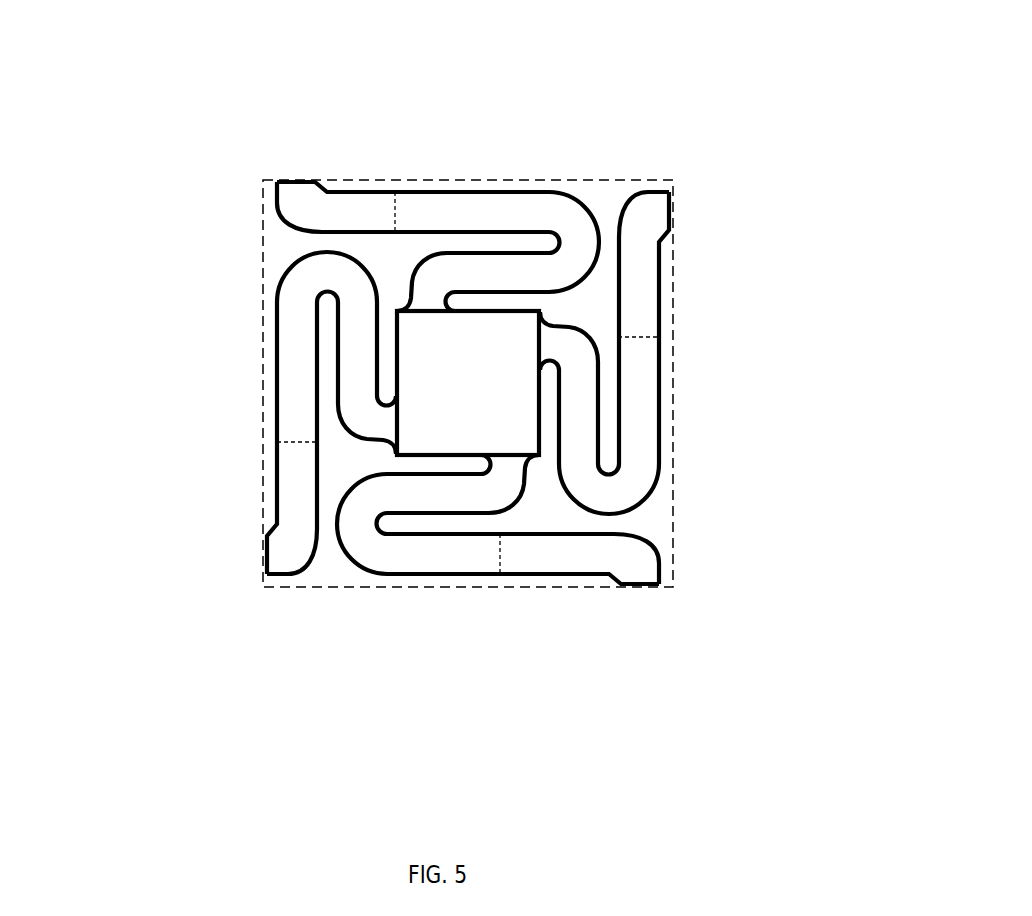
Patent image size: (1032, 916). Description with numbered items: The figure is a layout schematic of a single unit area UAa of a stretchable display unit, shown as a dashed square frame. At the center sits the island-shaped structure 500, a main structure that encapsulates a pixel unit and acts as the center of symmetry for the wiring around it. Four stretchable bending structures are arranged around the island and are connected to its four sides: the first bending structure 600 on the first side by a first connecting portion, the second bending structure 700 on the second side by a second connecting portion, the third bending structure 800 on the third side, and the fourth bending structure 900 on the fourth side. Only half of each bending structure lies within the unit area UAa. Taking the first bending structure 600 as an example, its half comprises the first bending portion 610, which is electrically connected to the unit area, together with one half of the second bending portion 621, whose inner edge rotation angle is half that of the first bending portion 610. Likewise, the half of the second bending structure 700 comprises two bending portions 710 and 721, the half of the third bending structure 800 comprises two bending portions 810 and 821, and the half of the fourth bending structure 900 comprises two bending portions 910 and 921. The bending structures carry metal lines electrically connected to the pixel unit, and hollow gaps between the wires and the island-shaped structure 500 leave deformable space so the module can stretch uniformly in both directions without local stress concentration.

The unit area UAa is at (688, 180).
The island-shaped structure 500 is at (468, 383).
The second bending structure 700 is at (438, 155).
The bending portion 710 is at (497, 206).
The bending portion 721 is at (352, 199).
The fourth bending structure 900 is at (731, 353).
The bending portion 910 is at (668, 412).
The bending portion 921 is at (648, 273).
The first bending structure 600 is at (498, 616).
The first bending portion 610 is at (439, 566).
The half of the second bending portion 621 is at (585, 575).
The third bending structure 800 is at (211, 413).
The bending portion 810 is at (277, 380).
The bending portion 821 is at (284, 487).